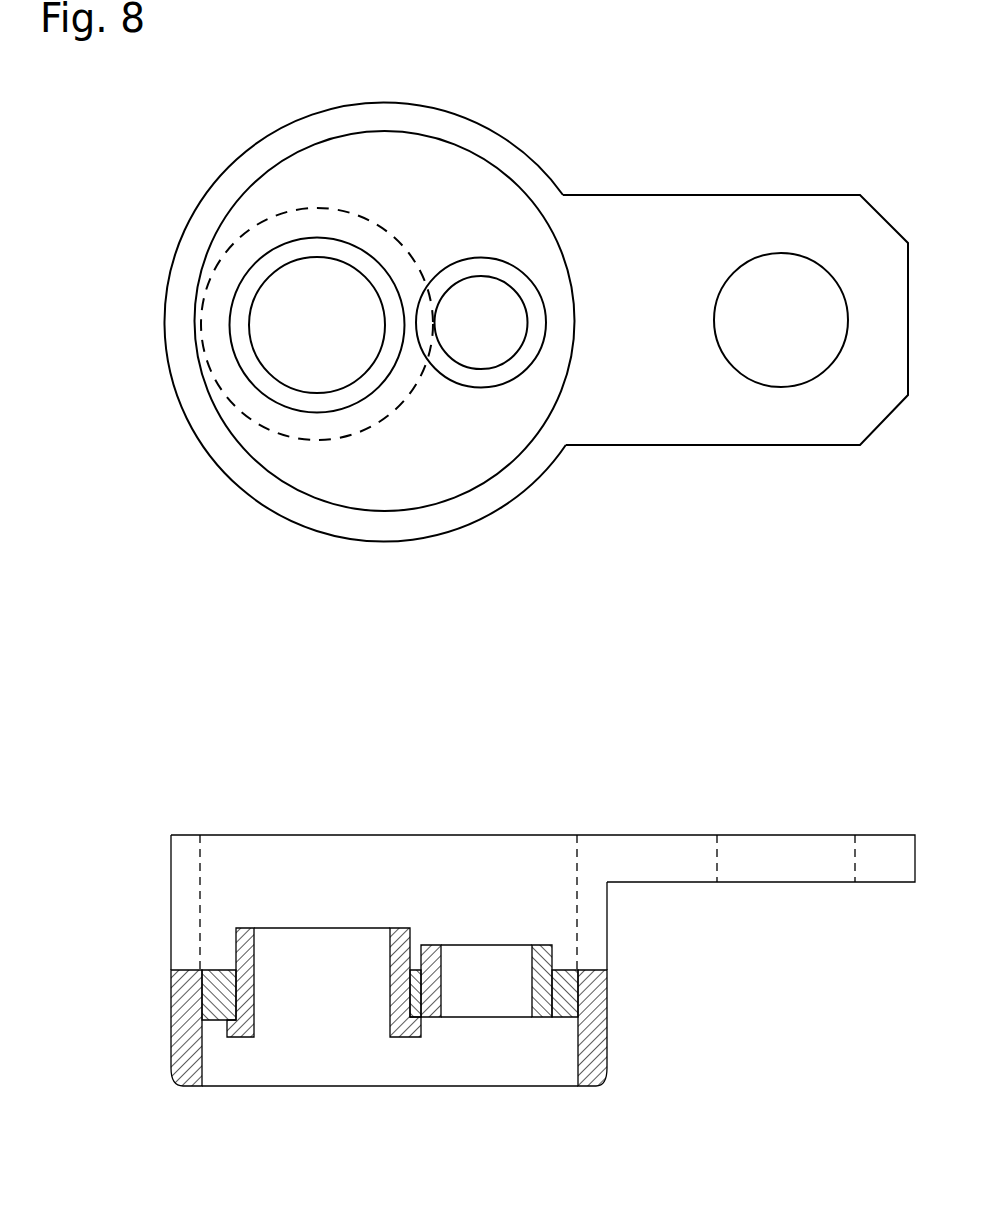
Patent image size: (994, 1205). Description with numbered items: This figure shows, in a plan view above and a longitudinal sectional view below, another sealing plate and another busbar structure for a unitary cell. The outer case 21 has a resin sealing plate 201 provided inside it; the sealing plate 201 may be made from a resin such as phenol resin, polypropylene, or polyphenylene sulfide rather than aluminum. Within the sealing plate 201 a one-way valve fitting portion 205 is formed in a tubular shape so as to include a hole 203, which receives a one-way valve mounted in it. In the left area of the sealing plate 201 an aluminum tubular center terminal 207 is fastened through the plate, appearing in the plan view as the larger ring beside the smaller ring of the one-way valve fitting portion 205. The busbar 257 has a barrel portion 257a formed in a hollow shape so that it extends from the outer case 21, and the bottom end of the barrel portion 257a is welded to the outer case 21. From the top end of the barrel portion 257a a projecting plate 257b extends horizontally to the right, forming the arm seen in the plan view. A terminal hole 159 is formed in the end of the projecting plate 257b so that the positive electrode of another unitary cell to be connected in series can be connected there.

The terminal hole 159 is at (781, 253).
The busbar 257 is at (780, 445).
The barrel portion 257a is at (607, 927).
The projecting plate 257b is at (787, 855).
The sealing plate 201 is at (218, 970).
The hole 203 is at (486, 960).
The one-way valve fitting portion 205 is at (433, 945).
The tubular center terminal 207 is at (240, 928).
The outer case 21 is at (607, 1006).